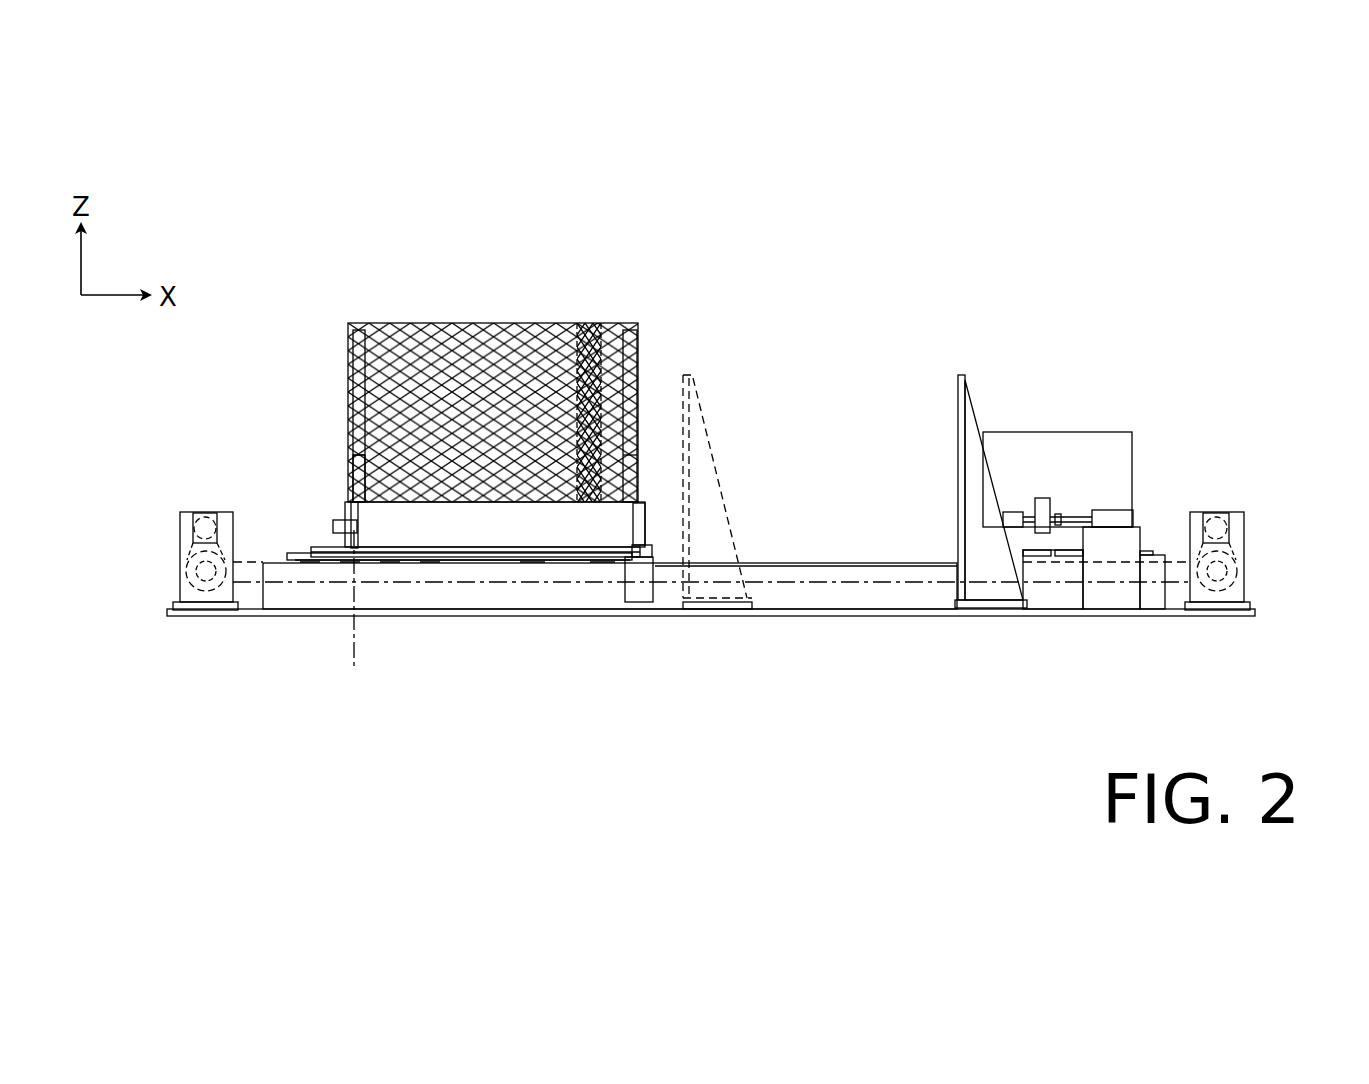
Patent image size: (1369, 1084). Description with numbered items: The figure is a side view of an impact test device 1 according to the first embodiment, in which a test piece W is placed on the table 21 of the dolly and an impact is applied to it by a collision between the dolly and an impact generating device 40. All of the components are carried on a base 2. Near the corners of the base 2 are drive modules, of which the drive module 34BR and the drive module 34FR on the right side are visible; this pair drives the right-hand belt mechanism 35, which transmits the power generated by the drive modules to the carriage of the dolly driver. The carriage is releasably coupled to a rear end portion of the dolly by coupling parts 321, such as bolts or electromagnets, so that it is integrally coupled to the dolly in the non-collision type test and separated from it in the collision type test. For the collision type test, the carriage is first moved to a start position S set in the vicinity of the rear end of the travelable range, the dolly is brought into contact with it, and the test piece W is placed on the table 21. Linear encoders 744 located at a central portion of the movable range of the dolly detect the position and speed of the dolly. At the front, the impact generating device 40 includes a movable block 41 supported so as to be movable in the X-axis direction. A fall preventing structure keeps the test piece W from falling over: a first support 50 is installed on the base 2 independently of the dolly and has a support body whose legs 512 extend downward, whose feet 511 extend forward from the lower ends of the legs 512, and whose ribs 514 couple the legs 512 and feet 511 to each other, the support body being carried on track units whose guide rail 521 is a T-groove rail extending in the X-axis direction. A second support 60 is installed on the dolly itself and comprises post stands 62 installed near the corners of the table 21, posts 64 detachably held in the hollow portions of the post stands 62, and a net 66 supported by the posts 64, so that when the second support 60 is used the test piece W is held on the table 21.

The impact test device 1 is at (1229, 257).
The base 2 is at (1186, 617).
The table 21 is at (500, 525).
The coupling parts 321 is at (362, 528).
The drive module 34BR is at (183, 527).
The drive module 34FR is at (1239, 513).
The belt mechanism 35 is at (1237, 571).
The impact generating device 40 is at (1095, 488).
The movable block 41 is at (1060, 440).
The first support 50 is at (1005, 490).
The feet 511 is at (992, 603).
The legs 512 is at (960, 520).
The ribs 514 is at (985, 418).
The guide rail 521 is at (785, 600).
The second support 60 is at (467, 381).
The post stands 62 is at (352, 470).
The posts 64 is at (345, 353).
The net 66 is at (472, 323).
The linear encoders 744 is at (640, 580).
The test piece W is at (605, 322).
The start position S is at (353, 617).